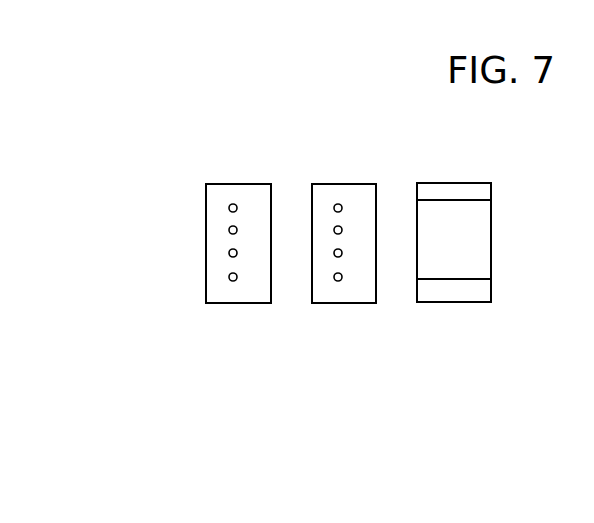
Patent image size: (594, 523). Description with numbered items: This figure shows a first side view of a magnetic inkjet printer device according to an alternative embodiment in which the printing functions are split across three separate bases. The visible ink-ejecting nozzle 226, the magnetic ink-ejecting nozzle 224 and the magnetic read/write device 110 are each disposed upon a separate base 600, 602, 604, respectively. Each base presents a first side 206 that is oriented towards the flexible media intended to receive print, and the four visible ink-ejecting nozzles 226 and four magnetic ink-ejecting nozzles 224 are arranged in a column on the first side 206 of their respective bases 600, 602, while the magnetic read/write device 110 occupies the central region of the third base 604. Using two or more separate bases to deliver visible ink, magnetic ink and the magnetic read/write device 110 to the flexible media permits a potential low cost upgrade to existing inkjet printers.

The base 600 is at (196, 210).
The base 602 is at (335, 176).
The base 604 is at (439, 176).
The first side 206 is at (250, 190).
The visible ink-ejecting nozzle 226 is at (246, 282).
The magnetic ink-ejecting nozzle 224 is at (356, 282).
The magnetic read/write device 110 is at (467, 248).